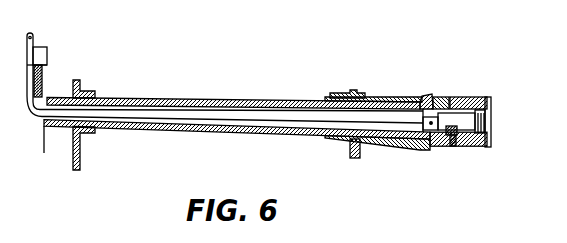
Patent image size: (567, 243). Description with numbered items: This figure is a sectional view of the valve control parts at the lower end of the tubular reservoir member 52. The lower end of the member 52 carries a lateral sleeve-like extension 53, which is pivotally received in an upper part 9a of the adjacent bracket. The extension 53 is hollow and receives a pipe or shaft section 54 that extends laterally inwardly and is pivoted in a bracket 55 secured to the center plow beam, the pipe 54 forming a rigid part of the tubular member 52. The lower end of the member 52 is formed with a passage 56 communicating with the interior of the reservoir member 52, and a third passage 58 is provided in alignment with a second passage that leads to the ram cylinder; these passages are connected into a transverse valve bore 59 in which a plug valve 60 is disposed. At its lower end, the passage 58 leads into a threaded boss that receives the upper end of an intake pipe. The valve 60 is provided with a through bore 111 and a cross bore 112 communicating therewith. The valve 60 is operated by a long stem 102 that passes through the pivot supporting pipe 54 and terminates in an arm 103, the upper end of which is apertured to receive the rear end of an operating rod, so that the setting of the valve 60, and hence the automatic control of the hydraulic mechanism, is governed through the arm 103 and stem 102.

The arm 103 is at (33, 43).
The bracket 55 is at (78, 83).
The pipe or shaft section 54 is at (230, 102).
The stem 102 is at (210, 117).
The upper part of bracket 9a is at (343, 93).
The lateral sleeve-like extension 53 is at (390, 103).
The cross bore 112 is at (440, 102).
The passage 56 is at (455, 103).
The plug valve 60 is at (475, 102).
The tubular member 52 is at (489, 102).
The transverse valve bore 59 is at (438, 147).
The through bore 111 is at (452, 146).
The third passage 58 is at (457, 135).